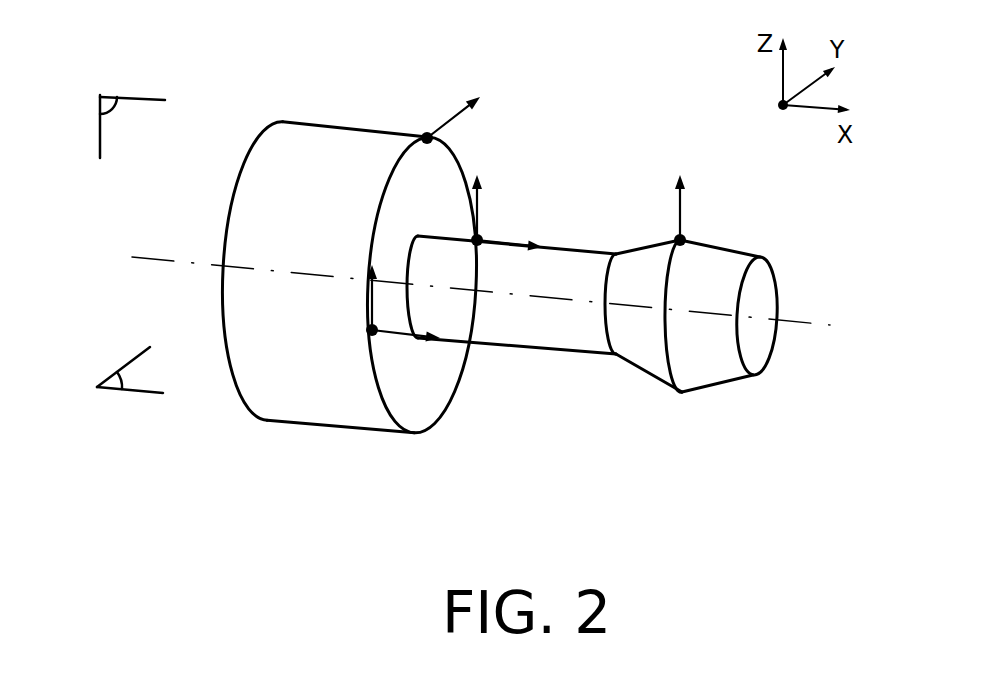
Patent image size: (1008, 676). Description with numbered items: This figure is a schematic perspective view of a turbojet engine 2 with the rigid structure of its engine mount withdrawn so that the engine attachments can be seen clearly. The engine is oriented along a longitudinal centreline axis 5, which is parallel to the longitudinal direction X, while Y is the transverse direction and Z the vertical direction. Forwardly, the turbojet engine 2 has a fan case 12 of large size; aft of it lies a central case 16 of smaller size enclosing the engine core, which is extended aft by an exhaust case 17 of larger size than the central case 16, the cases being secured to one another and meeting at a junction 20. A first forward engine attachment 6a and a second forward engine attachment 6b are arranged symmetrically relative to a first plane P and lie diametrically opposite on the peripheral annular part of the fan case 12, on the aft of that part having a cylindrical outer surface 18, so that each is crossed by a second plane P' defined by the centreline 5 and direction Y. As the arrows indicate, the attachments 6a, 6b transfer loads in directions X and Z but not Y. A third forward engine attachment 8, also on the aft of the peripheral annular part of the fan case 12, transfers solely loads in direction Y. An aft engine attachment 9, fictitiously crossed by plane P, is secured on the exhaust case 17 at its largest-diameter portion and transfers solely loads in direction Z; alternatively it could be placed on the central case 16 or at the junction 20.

The turbojet engine 2 is at (372, 455).
The centreline axis 5 is at (152, 257).
The first forward engine attachment 6a is at (366, 330).
The second forward engine attachment 6b is at (483, 239).
The third forward engine attachment 8 is at (426, 135).
The aft engine attachment 9 is at (686, 240).
The fan case 12 is at (278, 424).
The central case 16 is at (523, 338).
The exhaust case 17 is at (698, 392).
The cylindrical outer surface 18 is at (312, 140).
The junction 20 is at (604, 340).
The first plane P is at (111, 101).
The second plane P' is at (109, 361).